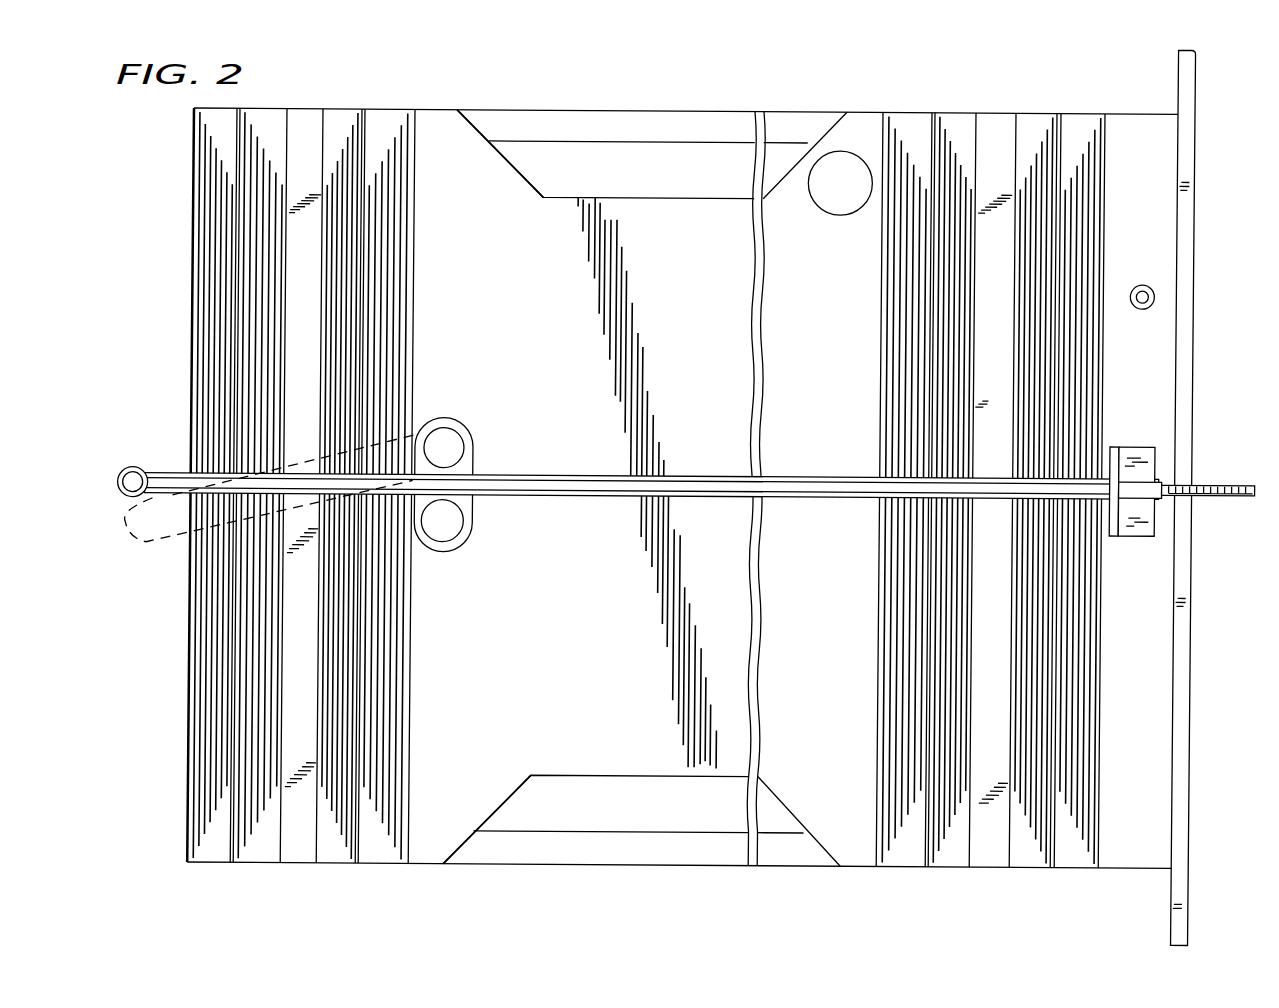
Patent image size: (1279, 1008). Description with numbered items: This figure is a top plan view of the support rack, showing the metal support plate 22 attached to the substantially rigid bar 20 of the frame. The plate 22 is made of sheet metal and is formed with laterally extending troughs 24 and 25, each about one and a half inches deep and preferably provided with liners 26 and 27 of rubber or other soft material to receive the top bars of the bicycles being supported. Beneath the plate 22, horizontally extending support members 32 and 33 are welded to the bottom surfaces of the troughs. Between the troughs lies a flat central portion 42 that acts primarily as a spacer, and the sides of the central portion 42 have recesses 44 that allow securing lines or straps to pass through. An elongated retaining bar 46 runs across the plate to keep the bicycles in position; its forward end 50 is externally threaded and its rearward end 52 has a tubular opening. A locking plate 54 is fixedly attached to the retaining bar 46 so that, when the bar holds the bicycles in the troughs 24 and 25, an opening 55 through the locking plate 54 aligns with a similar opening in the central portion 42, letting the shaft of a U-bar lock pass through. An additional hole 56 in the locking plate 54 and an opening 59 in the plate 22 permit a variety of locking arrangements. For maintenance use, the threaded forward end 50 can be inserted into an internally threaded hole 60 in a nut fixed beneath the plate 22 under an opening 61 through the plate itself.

The bar 20 is at (1178, 73).
The support plate 22 is at (851, 108).
The trough 24 is at (221, 850).
The trough 25 is at (1039, 854).
The liner 26 is at (368, 126).
The liner 27 is at (932, 853).
The support member 32 is at (565, 864).
The support member 33 is at (583, 108).
The central portion 42 is at (688, 321).
The recess 44 is at (536, 183).
The retaining bar 46 is at (686, 473).
The forward end 50 is at (1208, 478).
The rearward end 52 is at (131, 467).
The locking plate 54 is at (476, 460).
The opening 55 is at (440, 428).
The hole 56 is at (459, 528).
The opening 59 is at (823, 199).
The internally threaded hole 60 is at (1156, 285).
The opening 61 is at (1137, 302).